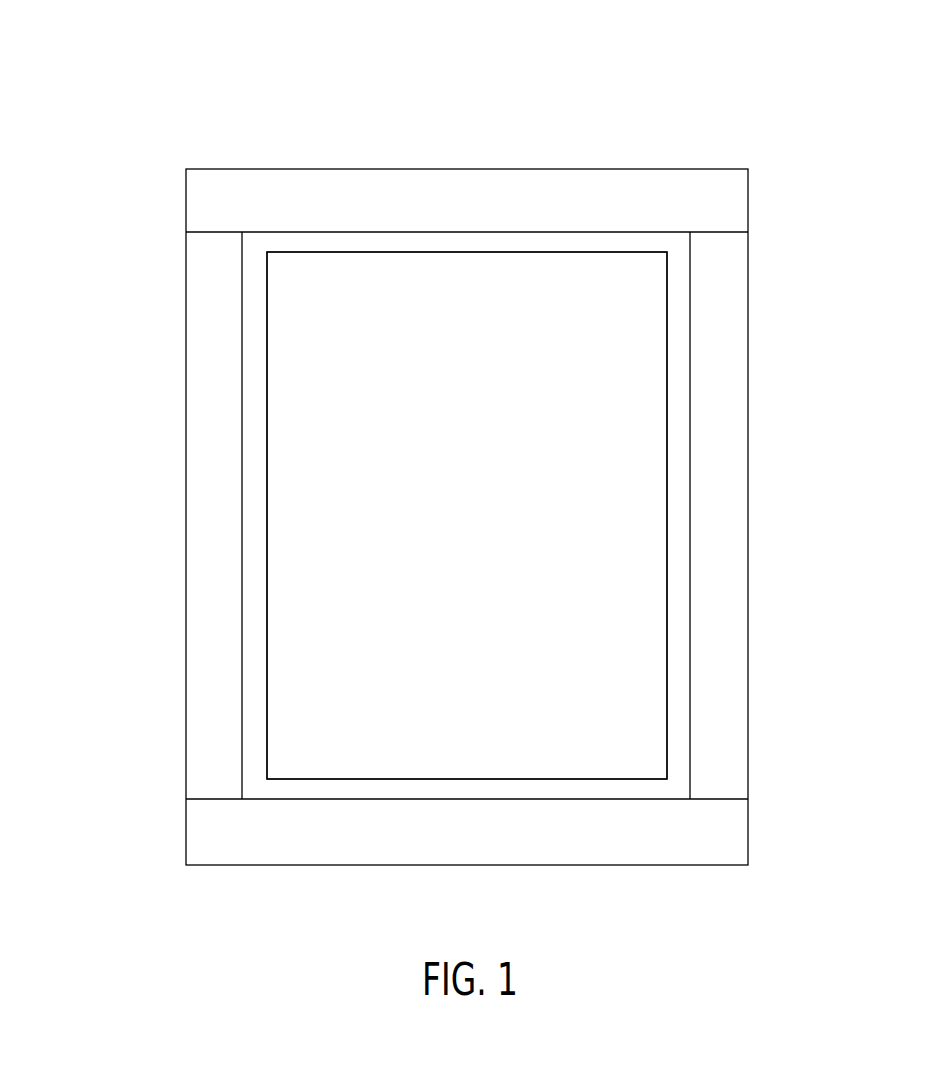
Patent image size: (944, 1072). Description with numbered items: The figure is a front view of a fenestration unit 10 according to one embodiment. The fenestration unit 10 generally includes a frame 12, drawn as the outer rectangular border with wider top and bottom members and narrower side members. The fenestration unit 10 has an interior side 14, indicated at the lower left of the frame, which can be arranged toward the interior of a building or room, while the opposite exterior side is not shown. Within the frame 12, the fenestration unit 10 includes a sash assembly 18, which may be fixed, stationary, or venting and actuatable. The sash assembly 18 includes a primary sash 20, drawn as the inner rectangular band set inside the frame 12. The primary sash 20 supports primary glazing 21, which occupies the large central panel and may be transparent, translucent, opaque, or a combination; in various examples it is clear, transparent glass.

The fenestration unit 10 is at (183, 89).
The frame 12 is at (554, 168).
The interior side 14 is at (150, 763).
The sash assembly 18 is at (676, 446).
The primary sash 20 is at (680, 667).
The primary glazing 21 is at (298, 614).